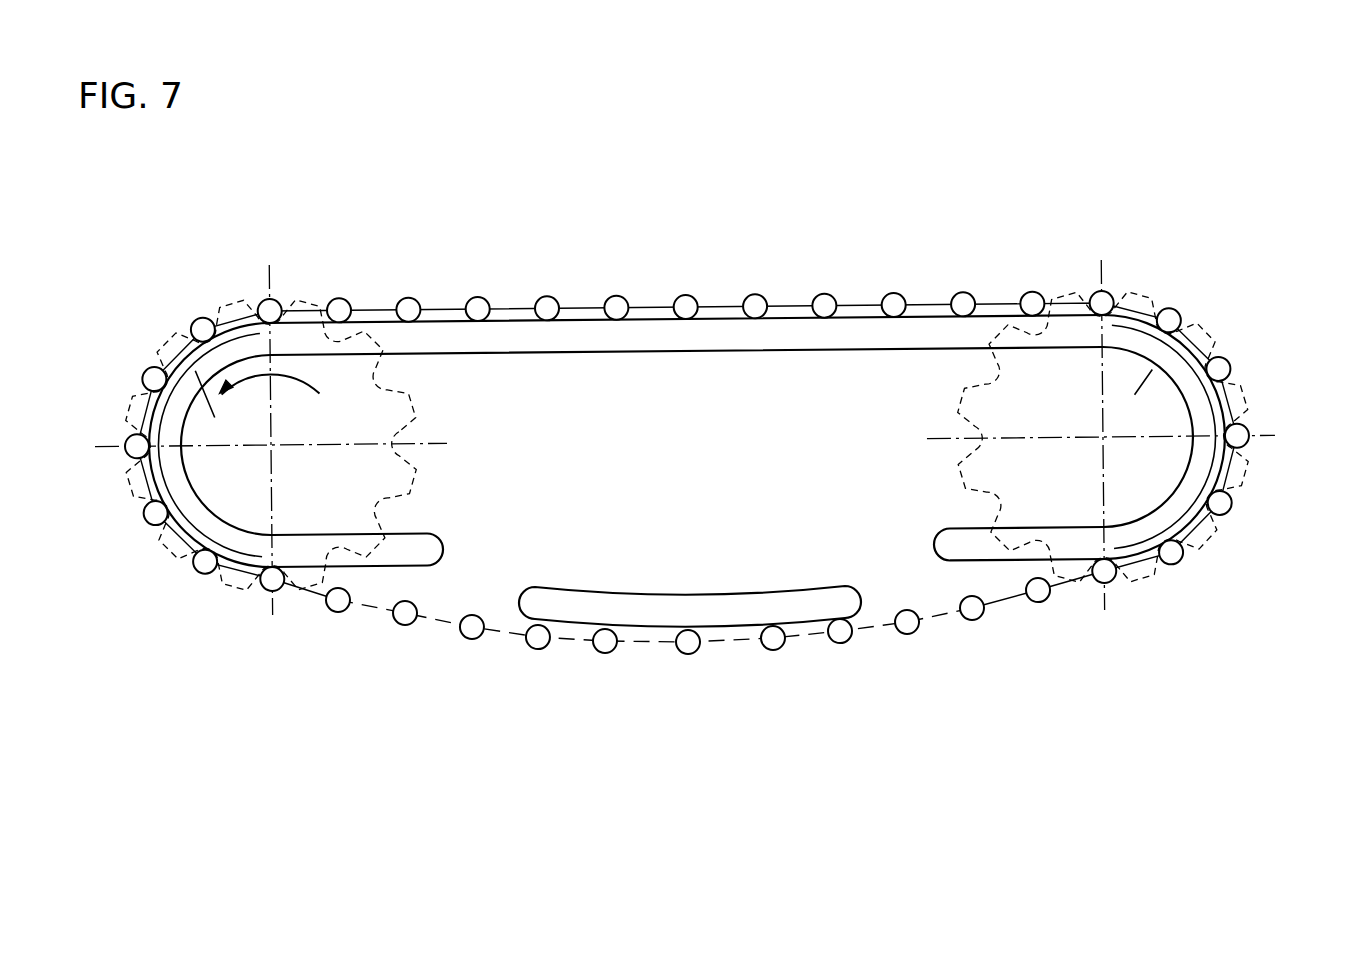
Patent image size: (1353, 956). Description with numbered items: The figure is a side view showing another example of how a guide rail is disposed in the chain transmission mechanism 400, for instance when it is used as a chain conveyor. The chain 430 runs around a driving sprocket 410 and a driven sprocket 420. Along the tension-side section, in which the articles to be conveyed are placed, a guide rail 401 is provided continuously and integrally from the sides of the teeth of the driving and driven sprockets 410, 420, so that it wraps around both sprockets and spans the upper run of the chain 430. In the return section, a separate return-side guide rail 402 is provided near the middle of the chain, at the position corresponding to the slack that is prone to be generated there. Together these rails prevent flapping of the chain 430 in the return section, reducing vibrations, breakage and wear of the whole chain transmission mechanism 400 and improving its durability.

The chain transmission mechanism 400 is at (405, 207).
The guide rail 401 is at (505, 332).
The return-side guide rail 402 is at (730, 612).
The driving sprocket 410 is at (152, 342).
The driven sprocket 420 is at (1222, 333).
The chain 430 is at (930, 305).